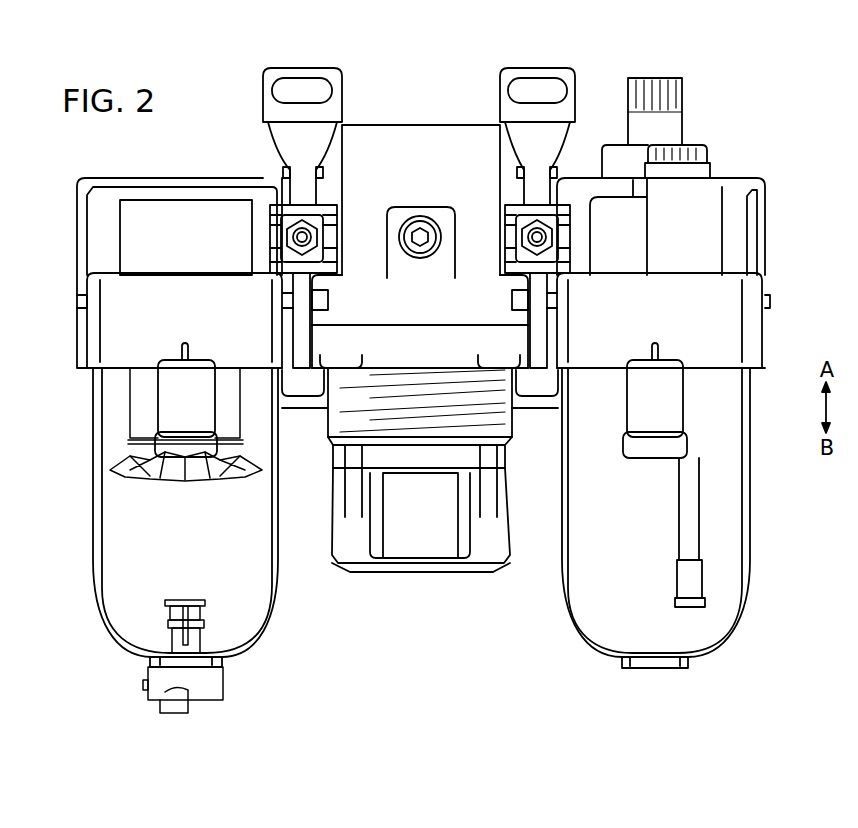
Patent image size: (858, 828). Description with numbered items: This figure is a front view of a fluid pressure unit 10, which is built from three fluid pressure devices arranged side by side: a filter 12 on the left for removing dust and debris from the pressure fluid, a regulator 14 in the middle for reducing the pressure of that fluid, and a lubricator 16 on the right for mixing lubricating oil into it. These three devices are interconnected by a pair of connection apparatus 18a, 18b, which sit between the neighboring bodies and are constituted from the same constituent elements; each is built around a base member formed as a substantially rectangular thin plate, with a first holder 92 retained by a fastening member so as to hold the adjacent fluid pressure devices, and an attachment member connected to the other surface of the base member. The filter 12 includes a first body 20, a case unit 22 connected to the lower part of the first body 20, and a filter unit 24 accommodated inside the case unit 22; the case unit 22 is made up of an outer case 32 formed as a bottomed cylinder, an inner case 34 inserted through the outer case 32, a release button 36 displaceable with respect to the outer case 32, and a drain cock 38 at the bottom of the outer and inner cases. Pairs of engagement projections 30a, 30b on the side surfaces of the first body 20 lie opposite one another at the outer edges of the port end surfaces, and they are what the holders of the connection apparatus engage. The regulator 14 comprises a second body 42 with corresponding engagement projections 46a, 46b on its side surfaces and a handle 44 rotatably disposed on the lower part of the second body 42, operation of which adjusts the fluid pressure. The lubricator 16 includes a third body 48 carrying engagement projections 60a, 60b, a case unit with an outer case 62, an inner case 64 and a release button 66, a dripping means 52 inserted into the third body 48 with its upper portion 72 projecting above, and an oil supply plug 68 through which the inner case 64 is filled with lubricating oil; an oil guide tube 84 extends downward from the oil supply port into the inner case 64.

The fluid pressure unit 10 is at (101, 162).
The filter 12 is at (157, 530).
The regulator 14 is at (420, 498).
The lubricator 16 is at (678, 522).
The connection apparatus 18a is at (268, 122).
The connection apparatus 18b is at (502, 122).
The first body 20 is at (76, 211).
The case unit 22 is at (257, 652).
The filter unit 24 is at (130, 398).
The engagement projections 30a is at (89, 240).
The engagement projections 30b is at (275, 200).
The outer case 32 is at (93, 532).
The inner case 34 is at (113, 497).
The release button 36 is at (168, 388).
The drain cock 38 is at (210, 688).
The second body 42 is at (420, 219).
The handle 44 is at (418, 545).
The engagement projections 46a is at (295, 206).
The engagement projections 46b is at (542, 206).
The third body 48 is at (697, 234).
The dripping means 52 is at (683, 88).
The engagement projections 60a is at (578, 192).
The engagement projections 60b is at (752, 233).
The outer case 62 is at (730, 637).
The inner case 64 is at (733, 513).
The release button 66 is at (638, 388).
The oil supply plug 68 is at (683, 172).
The knob stem 72 is at (684, 106).
The oil guide tube 84 is at (678, 493).
The first holder 92 is at (334, 236).